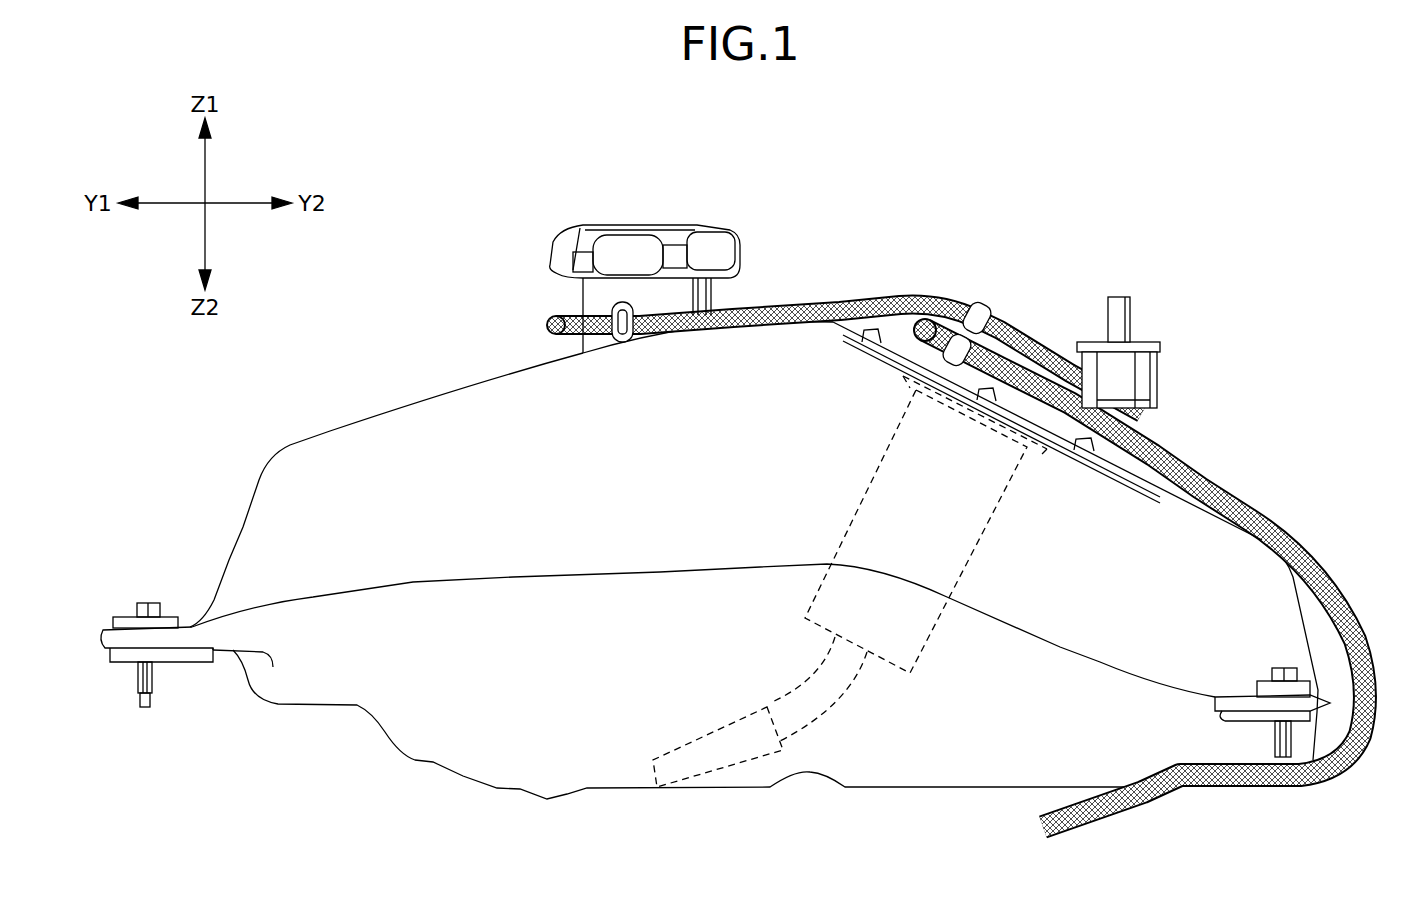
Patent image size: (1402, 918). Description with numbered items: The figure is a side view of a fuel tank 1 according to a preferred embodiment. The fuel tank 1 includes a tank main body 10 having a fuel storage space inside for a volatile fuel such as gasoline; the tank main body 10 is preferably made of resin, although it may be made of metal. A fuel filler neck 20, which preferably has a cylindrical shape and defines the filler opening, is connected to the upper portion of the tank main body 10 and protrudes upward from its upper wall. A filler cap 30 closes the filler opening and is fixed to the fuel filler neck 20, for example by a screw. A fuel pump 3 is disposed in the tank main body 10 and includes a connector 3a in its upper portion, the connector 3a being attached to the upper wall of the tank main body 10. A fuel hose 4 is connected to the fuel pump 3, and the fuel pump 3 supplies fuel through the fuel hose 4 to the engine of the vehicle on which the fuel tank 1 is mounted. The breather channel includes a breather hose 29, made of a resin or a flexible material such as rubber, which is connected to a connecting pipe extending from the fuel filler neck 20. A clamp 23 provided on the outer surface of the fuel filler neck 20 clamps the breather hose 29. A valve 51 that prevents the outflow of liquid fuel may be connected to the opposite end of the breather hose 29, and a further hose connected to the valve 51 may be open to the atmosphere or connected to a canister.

The fuel tank 1 is at (849, 250).
The fuel pump 3 is at (984, 530).
The connector 3a is at (900, 353).
The fuel hose 4 is at (1186, 470).
The tank main body 10 is at (437, 412).
The fuel filler neck 20 is at (712, 297).
The clamp 23 is at (623, 343).
The breather hose 29 is at (554, 320).
The filler cap 30 is at (668, 226).
The valve 51 is at (1088, 342).